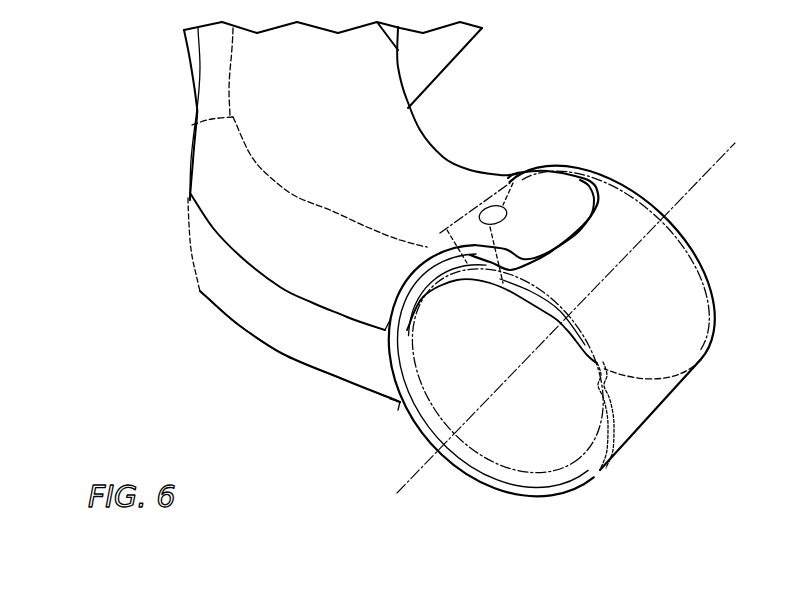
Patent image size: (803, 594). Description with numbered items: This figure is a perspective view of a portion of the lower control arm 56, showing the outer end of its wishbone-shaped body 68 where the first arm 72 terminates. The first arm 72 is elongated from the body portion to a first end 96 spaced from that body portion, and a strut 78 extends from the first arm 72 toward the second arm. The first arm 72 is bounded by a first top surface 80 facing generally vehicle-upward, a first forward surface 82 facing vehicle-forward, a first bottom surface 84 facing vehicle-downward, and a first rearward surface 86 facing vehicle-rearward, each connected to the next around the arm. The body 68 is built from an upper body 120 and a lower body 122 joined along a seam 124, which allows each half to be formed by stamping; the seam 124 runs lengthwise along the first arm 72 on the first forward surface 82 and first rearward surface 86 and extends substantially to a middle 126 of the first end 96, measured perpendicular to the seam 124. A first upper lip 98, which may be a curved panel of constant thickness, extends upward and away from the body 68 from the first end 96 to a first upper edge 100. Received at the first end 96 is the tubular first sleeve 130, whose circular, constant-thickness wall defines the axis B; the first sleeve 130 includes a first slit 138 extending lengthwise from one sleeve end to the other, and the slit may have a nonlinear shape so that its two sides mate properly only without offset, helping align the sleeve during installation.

The lower control arm 56 is at (103, 289).
The body 68 is at (190, 60).
The first arm 72 is at (203, 300).
The strut 78 is at (467, 50).
The first top surface 80 is at (195, 125).
The first forward surface 82 is at (190, 168).
The first bottom surface 84 is at (283, 355).
The first rearward surface 86 is at (457, 158).
The first end 96 is at (400, 403).
The first upper lip 98 is at (567, 173).
The first upper edge 100 is at (583, 247).
The upper body 120 is at (423, 137).
The lower body 122 is at (242, 328).
The seam 124 is at (215, 232).
The middle 126 is at (385, 329).
The first sleeve 130 is at (663, 403).
The first slit 138 is at (420, 300).